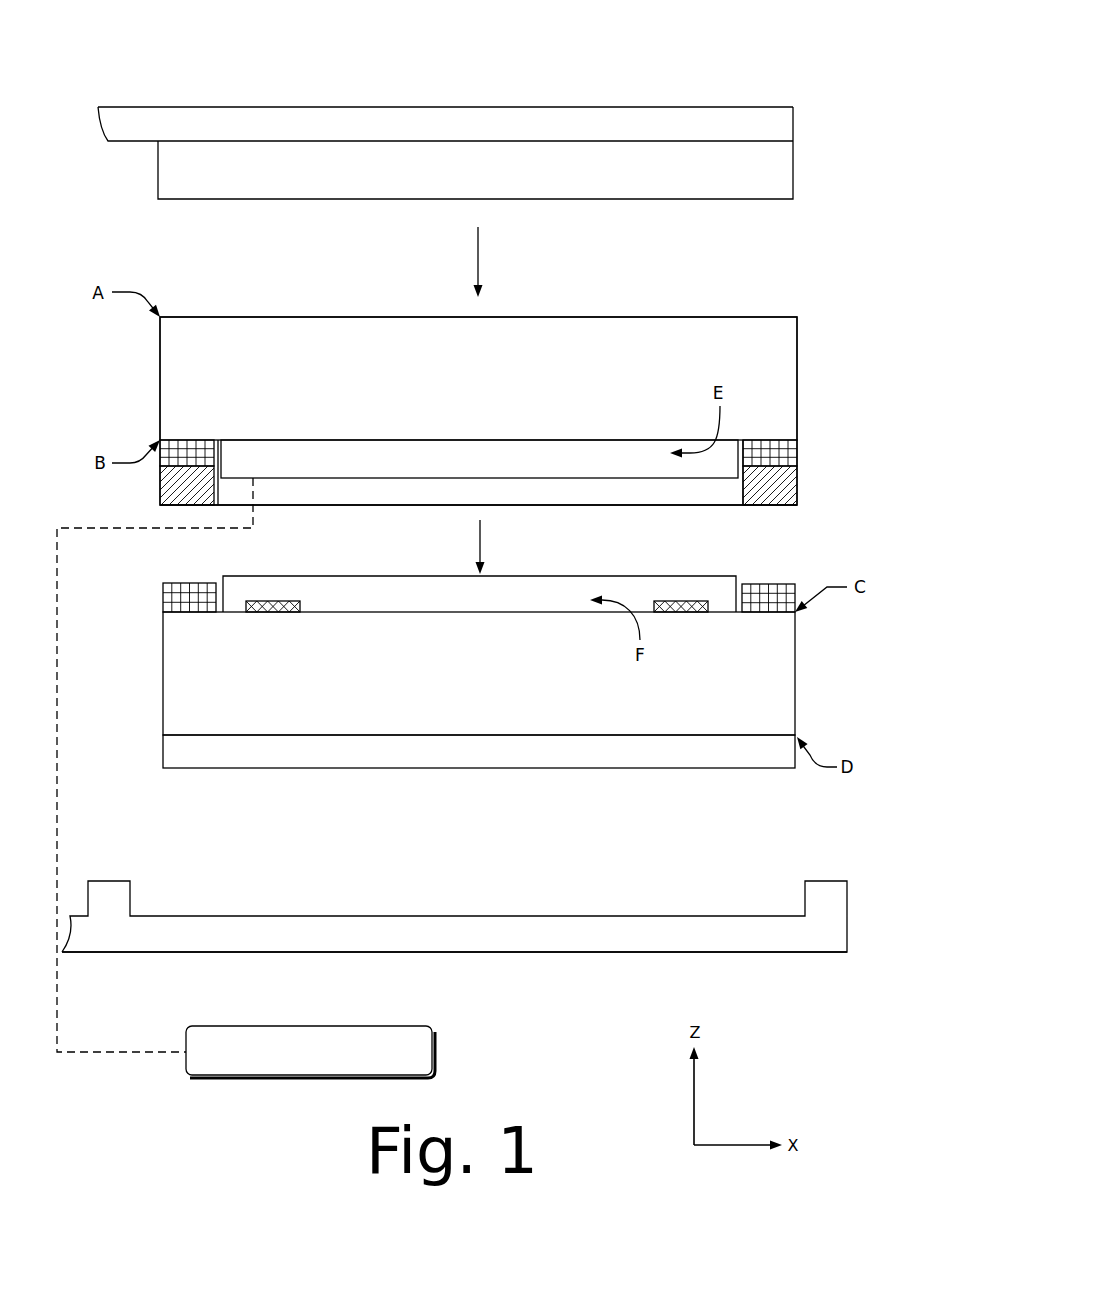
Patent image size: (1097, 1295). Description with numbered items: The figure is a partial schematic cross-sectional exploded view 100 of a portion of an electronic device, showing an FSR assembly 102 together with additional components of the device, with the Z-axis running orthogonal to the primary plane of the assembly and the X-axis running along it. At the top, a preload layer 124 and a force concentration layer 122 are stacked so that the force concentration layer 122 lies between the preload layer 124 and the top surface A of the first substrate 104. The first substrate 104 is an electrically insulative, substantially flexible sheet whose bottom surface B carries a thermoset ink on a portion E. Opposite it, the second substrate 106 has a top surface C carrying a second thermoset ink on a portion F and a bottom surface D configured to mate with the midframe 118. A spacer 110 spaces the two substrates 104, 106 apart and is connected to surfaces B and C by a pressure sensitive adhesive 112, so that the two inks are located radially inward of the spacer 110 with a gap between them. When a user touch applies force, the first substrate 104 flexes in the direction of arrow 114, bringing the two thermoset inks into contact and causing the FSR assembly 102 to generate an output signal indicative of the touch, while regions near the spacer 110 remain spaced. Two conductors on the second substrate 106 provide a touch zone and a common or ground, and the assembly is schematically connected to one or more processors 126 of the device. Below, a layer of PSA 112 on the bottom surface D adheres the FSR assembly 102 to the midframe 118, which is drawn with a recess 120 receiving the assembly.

The partial schematic cross-sectional view 100 is at (712, 50).
The FSR assembly 102 is at (753, 290).
The first substrate 104 is at (478, 378).
The second substrate 106 is at (479, 673).
The spacer 110 is at (547, 505).
The pressure sensitive adhesive 112 is at (845, 422).
The arrow 114 is at (480, 545).
The midframe 118 is at (570, 952).
The recess 120 is at (764, 862).
The force concentration layer 122 is at (475, 153).
The preload layer 124 is at (445, 124).
The processors 126 is at (310, 1052).